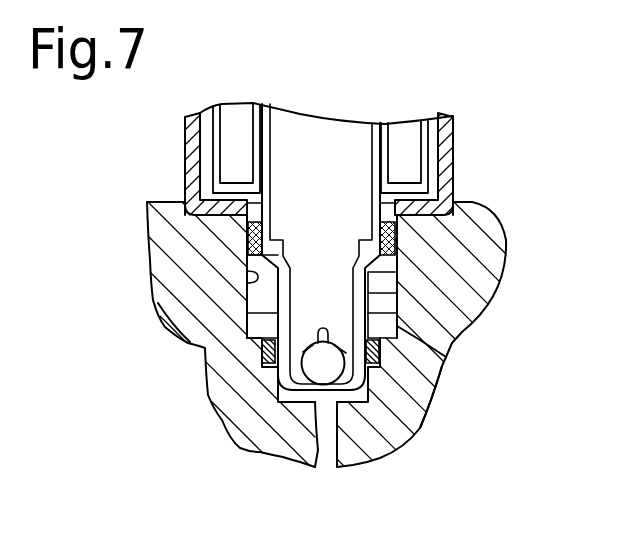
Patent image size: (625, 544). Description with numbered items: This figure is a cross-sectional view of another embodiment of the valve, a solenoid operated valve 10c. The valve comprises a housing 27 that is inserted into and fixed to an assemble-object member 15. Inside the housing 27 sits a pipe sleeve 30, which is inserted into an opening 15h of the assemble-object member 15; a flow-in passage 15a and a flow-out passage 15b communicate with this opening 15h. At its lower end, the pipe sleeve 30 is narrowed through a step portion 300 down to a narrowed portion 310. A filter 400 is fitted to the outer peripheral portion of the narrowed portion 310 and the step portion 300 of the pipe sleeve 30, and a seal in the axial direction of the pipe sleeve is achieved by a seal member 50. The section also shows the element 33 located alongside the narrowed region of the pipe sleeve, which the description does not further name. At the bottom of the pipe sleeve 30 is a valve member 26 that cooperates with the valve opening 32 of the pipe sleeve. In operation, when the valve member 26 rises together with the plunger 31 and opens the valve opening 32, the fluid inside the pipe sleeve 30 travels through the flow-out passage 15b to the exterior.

The solenoid operated valve 10c is at (461, 95).
The housing 27 is at (455, 116).
The plunger 31 is at (295, 133).
The pipe sleeve 30 is at (378, 133).
The seal member 50 is at (397, 212).
The step portion 300 is at (392, 265).
The narrowed portion 310 is at (392, 284).
The ring 33 is at (392, 311).
The assemble-object member 15 is at (203, 328).
The opening 15h is at (247, 277).
The flow-in passage 15a is at (456, 338).
The filter 400 is at (448, 362).
The valve member 26 is at (330, 372).
The valve opening 32 is at (370, 461).
The flow-out passage 15b is at (313, 466).